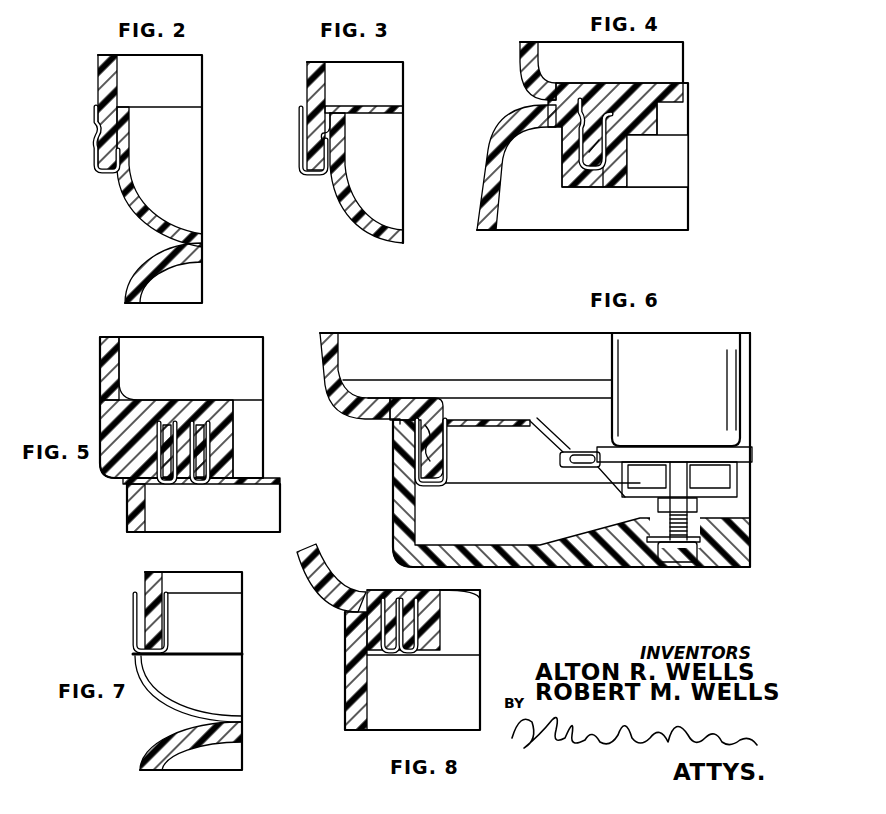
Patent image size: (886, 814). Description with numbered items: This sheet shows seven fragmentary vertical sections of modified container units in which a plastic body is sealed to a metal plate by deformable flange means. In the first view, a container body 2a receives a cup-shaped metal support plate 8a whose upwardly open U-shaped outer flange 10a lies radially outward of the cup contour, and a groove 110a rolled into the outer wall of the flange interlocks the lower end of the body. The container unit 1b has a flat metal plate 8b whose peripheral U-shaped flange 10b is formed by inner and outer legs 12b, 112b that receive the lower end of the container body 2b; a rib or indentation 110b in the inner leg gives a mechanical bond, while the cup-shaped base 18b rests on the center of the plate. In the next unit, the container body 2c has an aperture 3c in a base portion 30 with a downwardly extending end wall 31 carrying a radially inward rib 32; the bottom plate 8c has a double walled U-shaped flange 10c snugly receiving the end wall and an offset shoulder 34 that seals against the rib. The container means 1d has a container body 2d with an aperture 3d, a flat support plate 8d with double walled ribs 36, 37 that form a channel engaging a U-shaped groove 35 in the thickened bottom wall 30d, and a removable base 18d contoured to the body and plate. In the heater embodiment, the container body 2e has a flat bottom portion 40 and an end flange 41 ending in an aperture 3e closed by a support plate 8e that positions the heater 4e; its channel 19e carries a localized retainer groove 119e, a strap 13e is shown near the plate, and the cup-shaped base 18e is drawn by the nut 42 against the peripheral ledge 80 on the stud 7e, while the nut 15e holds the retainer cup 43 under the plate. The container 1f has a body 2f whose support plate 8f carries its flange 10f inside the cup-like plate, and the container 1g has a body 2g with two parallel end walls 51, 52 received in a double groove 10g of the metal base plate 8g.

In FIG. 2, the container body 2a is at (78, 112).
In FIG. 2, the outer flange 10a is at (159, 161).
In FIG. 2, the groove 110a is at (73, 139).
In FIG. 2, the metal support plate 8a is at (147, 179).
In FIG. 3, the container unit 1b is at (325, 149).
In FIG. 3, the container body 2b is at (296, 112).
In FIG. 3, the rib or indentation 110b is at (344, 110).
In FIG. 3, the metal plate 8b is at (355, 152).
In FIG. 3, the inner leg 12b is at (366, 178).
In FIG. 3, the outer leg 112b is at (287, 140).
In FIG. 3, the U-shaped flange 10b is at (279, 177).
In FIG. 3, the base 18b is at (315, 212).
In FIG. 4, the container body 2c is at (578, 71).
In FIG. 4, the base portion 30 is at (615, 121).
In FIG. 4, the rib 32 is at (617, 121).
In FIG. 4, the aperture 3c is at (643, 93).
In FIG. 4, the bottom plate 8c is at (599, 136).
In FIG. 4, the shoulder 34 is at (657, 156).
In FIG. 4, the U-shaped flange 10c is at (622, 138).
In FIG. 4, the end wall 31 is at (588, 177).
In FIG. 5, the container means 1d is at (174, 434).
In FIG. 5, the container body 2d is at (89, 368).
In FIG. 5, the groove 35 is at (160, 426).
In FIG. 5, the bottom wall 30d is at (166, 420).
In FIG. 5, the aperture 3d is at (193, 407).
In FIG. 5, the support plate 8d is at (211, 463).
In FIG. 5, the rib 36 is at (167, 465).
In FIG. 5, the rib 37 is at (203, 465).
In FIG. 5, the base 18d is at (178, 508).
In FIG. 6, the container body 2e is at (516, 376).
In FIG. 6, the bottom portion 40 is at (416, 419).
In FIG. 6, the heater 4e is at (658, 397).
In FIG. 6, the peripheral portion 80 is at (371, 432).
In FIG. 6, the support plate 8e is at (541, 451).
In FIG. 6, the retainer groove 119e is at (387, 447).
In FIG. 6, the channel 19e is at (455, 452).
In FIG. 6, the end flange 41 is at (436, 498).
In FIG. 6, the aperture 3e is at (571, 450).
In FIG. 6, the strap 13e is at (577, 459).
In FIG. 6, the base 18e is at (492, 530).
In FIG. 6, the retainer cup 43 is at (685, 501).
In FIG. 6, the nut 15e is at (705, 510).
In FIG. 6, the stud 7e is at (677, 568).
In FIG. 6, the nut 42 is at (684, 564).
In FIG. 7, the container 1f is at (160, 671).
In FIG. 7, the container body 2f is at (127, 611).
In FIG. 7, the flange 10f is at (171, 622).
In FIG. 7, the support plate 8f is at (187, 671).
In FIG. 8, the container 1g is at (399, 637).
In FIG. 8, the container body 2g is at (324, 580).
In FIG. 8, the double groove 10g is at (403, 607).
In FIG. 8, the metal base plate 8g is at (430, 660).
In FIG. 8, the end wall 51 is at (392, 641).
In FIG. 8, the end wall 52 is at (417, 641).